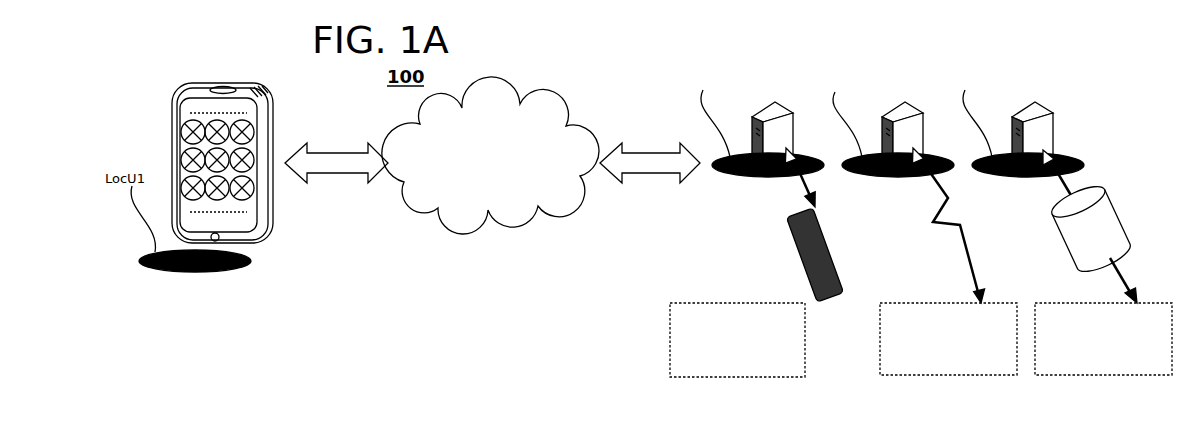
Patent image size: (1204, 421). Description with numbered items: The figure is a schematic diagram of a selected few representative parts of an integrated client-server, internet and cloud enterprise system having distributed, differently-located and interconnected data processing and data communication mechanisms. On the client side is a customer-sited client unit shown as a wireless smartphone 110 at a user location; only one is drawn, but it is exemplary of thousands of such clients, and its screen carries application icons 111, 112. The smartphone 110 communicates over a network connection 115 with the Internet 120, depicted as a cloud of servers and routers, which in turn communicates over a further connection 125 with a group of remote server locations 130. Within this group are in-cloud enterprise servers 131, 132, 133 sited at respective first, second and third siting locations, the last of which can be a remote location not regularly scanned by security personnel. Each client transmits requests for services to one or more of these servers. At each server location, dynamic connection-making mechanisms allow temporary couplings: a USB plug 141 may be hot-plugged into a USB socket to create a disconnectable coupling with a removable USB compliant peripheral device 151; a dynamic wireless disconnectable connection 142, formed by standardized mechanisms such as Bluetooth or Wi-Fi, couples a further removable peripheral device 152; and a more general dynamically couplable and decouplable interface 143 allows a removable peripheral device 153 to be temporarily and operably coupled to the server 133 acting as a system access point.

The wireless smartphone 110 is at (197, 86).
The application icon 111 is at (182, 127).
The application icon 112 is at (182, 152).
The network connection 115 is at (333, 152).
The Internet (servers, routers) 120 is at (503, 118).
The network connection 125 is at (648, 152).
The remote locations 130 is at (811, 43).
The in-cloud server 131 is at (793, 125).
The in-cloud server 132 is at (923, 125).
The server 133 is at (1053, 125).
The USB plug 141 is at (795, 228).
The dynamic wireless disconnectable connection 142 is at (933, 205).
The dynamically couplable and decouplable interface 143 is at (1052, 207).
The removable USB compliant peripheral device 151 is at (740, 302).
The removable peripheral device 152 is at (950, 302).
The removable peripheral device 153 is at (1105, 302).